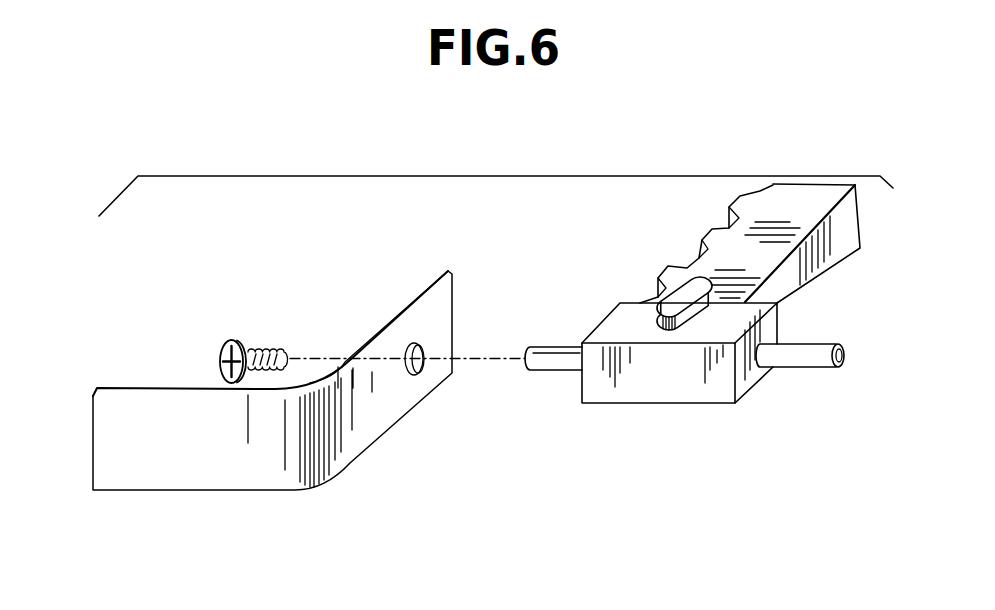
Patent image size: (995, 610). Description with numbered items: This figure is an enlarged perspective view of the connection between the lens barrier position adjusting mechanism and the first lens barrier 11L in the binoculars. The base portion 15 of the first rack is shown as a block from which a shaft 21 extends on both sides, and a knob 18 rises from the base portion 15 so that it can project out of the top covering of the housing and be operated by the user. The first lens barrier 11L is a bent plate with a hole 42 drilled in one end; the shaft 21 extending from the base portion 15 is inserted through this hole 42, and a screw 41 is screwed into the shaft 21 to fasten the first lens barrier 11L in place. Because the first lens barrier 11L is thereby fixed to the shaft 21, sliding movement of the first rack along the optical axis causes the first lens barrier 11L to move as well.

The first lens barrier 11L is at (286, 490).
The screw 41 is at (270, 352).
The hole 42 is at (420, 373).
The base portion 15 is at (685, 385).
The knob 18 is at (667, 331).
The shaft 21 is at (543, 370).